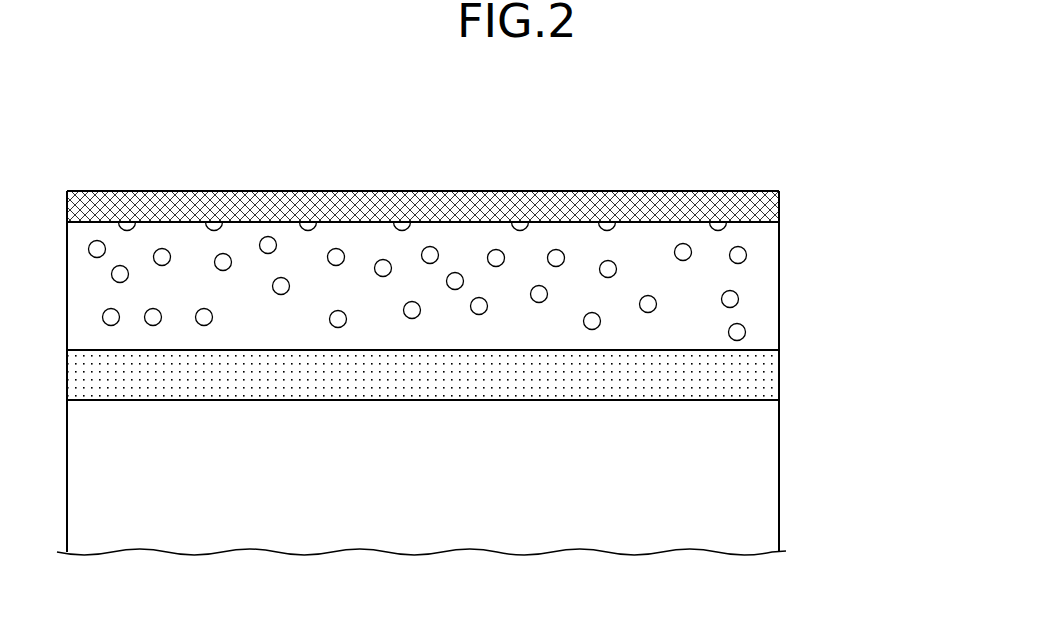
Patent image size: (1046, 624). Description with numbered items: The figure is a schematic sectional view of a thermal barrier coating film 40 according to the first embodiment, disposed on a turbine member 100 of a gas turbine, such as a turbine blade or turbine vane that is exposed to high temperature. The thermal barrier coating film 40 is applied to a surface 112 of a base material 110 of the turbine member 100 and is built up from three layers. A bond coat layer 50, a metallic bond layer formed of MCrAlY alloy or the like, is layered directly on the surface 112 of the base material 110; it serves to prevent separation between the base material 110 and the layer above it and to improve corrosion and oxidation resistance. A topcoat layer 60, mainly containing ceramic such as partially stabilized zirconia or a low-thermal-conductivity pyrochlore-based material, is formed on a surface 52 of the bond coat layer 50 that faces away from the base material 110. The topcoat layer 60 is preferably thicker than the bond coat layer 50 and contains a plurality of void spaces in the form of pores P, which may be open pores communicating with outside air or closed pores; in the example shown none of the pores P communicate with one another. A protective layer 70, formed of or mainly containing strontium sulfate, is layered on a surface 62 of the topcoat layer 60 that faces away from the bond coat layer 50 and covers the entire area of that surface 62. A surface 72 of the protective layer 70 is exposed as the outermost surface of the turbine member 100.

The turbine member 100 is at (796, 140).
The base material 110 is at (758, 480).
The surface of base material 112 is at (766, 402).
The bond coat layer 50 is at (758, 373).
The surface of bond coat layer 52 is at (765, 351).
The topcoat layer 60 is at (475, 242).
The surface of topcoat layer 62 is at (779, 222).
The protective layer 70 is at (758, 203).
The surface of protective layer 72 is at (641, 190).
The thermal barrier coating film 40 is at (885, 165).
The pores P is at (216, 220).